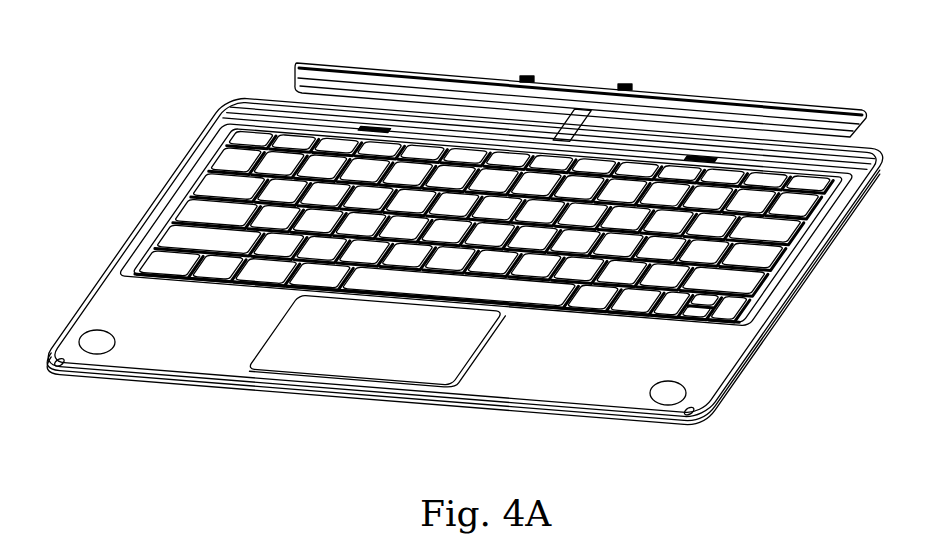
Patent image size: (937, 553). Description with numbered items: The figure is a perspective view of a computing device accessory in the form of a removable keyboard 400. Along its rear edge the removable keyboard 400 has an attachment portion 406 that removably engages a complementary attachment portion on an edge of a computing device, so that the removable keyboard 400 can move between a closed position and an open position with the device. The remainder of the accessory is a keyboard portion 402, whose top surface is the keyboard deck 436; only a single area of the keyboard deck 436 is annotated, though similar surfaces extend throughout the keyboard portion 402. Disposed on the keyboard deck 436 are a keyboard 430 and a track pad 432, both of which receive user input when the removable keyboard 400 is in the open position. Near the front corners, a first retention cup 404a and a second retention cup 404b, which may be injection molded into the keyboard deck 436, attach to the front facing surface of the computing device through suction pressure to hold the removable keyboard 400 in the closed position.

The removable keyboard 400 is at (136, 63).
The keyboard portion 402 is at (128, 242).
The first retention cup 404a is at (672, 393).
The second retention cup 404b is at (103, 341).
The attachment portion 406 is at (752, 102).
The keyboard 430 is at (793, 252).
The track pad 432 is at (391, 355).
The keyboard deck 436 is at (605, 371).